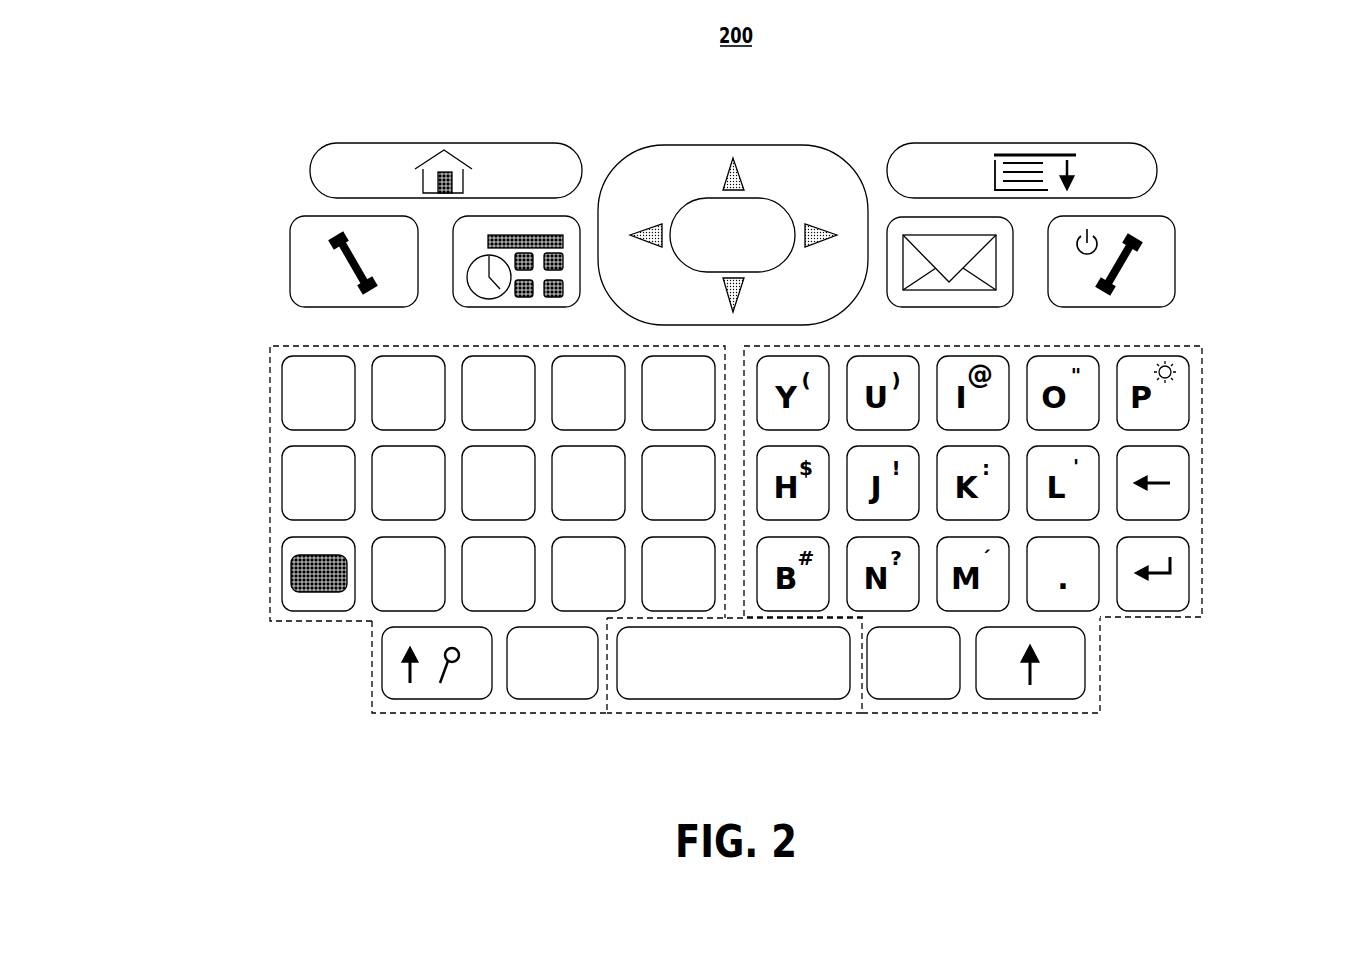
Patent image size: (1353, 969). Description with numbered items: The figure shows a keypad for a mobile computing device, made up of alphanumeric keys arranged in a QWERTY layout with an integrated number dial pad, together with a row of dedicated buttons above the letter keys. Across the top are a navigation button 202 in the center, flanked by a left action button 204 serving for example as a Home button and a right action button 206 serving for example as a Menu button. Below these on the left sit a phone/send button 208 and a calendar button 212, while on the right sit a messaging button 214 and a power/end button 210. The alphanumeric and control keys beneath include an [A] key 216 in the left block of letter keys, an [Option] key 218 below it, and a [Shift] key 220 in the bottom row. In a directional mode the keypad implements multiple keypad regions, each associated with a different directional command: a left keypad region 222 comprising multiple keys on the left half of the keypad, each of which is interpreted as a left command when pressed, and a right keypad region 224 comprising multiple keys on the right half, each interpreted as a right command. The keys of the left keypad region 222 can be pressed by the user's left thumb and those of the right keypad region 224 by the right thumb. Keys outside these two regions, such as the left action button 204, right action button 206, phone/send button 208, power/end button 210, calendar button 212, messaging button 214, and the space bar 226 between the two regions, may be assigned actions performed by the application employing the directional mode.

The navigation button 202 is at (690, 145).
The left action button 204 is at (310, 172).
The right action button 206 is at (1157, 172).
The phone/send button 208 is at (290, 280).
The power/end button 210 is at (1175, 280).
The calendar button 212 is at (363, 276).
The messaging button 214 is at (1107, 276).
The [A] key 216 is at (282, 483).
The [Option] key 218 is at (282, 572).
The [Shift] key 220 is at (382, 662).
The left keypad region 222 is at (498, 713).
The right keypad region 224 is at (973, 713).
The space bar 226 is at (737, 699).